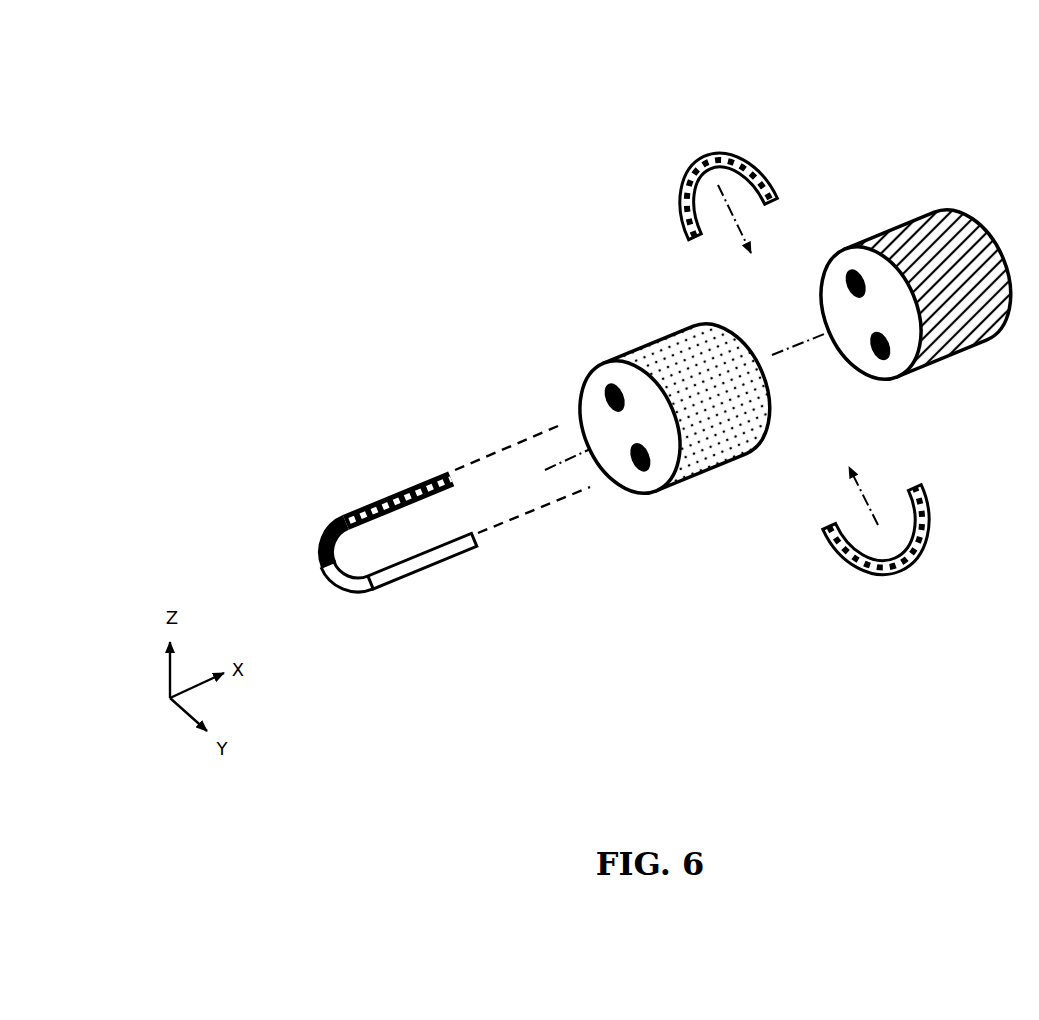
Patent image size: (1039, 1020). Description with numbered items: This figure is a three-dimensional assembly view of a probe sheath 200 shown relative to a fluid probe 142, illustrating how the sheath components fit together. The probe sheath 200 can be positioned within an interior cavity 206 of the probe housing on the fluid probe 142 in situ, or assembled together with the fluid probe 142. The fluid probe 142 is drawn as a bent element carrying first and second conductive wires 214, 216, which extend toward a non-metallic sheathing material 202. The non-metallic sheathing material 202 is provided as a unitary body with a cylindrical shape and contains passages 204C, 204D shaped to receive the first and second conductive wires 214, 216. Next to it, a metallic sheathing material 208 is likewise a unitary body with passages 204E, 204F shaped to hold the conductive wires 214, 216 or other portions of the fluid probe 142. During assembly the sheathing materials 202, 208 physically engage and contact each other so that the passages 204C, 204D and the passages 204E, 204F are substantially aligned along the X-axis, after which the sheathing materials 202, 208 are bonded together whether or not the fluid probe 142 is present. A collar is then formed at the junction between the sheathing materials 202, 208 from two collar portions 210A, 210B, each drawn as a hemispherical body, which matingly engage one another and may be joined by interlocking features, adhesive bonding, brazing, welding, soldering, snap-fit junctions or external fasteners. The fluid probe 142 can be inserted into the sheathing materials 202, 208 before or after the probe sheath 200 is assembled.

The probe sheath 200 is at (898, 142).
The interior cavity 206 is at (447, 329).
The fluid probe 142 is at (280, 525).
The first conductive wire 214 is at (372, 500).
The second conductive wire 216 is at (420, 565).
The non-metallic sheathing material 202 is at (700, 453).
The passage 204C is at (604, 392).
The passage 204D is at (640, 470).
The metallic sheathing material 208 is at (978, 328).
The passage 204E is at (843, 275).
The passage 204F is at (890, 357).
The collar portion 210A is at (689, 169).
The collar portion 210B is at (905, 565).